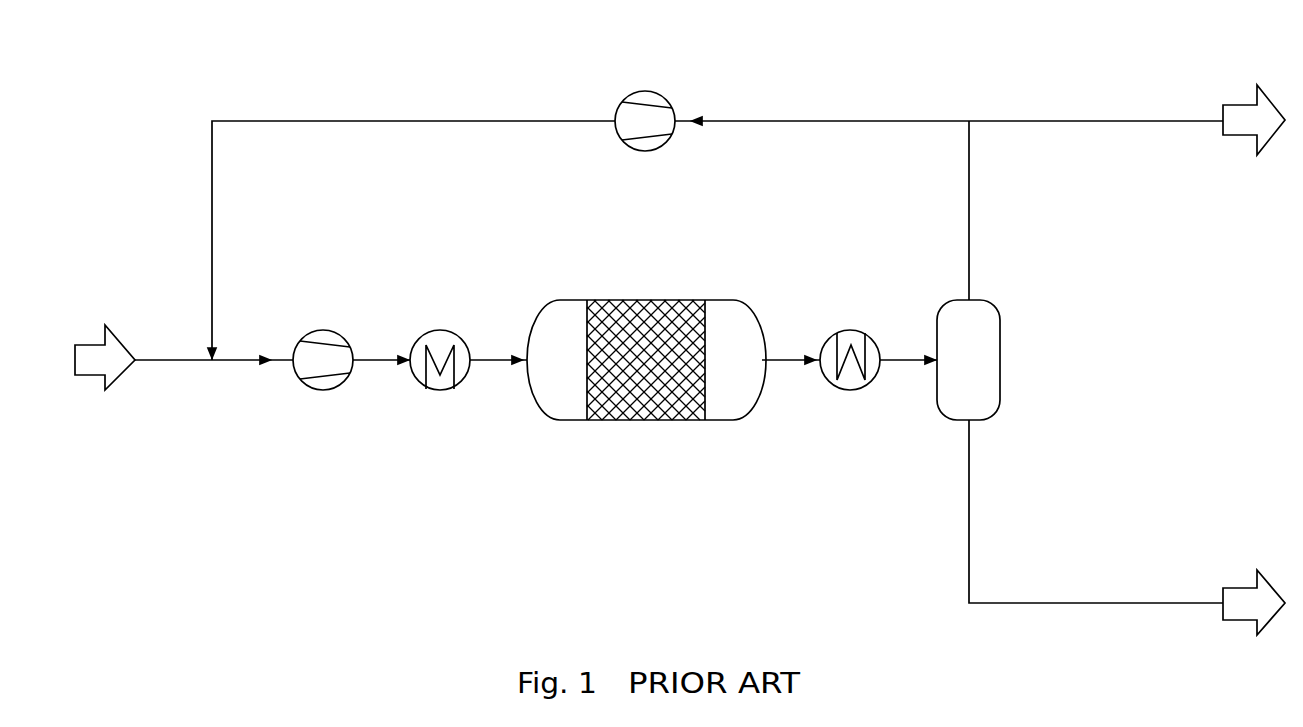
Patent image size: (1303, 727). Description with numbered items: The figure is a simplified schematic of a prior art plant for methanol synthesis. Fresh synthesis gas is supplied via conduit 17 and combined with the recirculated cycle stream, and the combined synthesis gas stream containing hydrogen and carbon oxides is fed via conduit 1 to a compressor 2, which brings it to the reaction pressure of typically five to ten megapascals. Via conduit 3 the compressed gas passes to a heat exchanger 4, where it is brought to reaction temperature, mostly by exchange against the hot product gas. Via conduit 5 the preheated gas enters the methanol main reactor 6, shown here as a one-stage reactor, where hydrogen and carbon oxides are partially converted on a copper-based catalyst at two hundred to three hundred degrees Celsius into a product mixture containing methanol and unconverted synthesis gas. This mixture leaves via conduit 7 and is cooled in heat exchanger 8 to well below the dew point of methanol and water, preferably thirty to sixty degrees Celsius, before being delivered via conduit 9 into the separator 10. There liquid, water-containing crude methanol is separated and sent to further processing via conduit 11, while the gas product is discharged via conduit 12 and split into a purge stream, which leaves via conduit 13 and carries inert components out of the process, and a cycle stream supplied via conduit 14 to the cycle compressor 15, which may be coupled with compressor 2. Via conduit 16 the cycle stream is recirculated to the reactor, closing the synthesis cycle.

The conduit 1 is at (252, 340).
The compressor 2 is at (323, 381).
The conduit 3 is at (381, 339).
The heat exchanger 4 is at (440, 381).
The conduit 5 is at (498, 339).
The methanol main reactor 6 is at (646, 380).
The conduit 7 is at (791, 343).
The heat exchanger 8 is at (850, 381).
The conduit 9 is at (908, 343).
The separator 10 is at (993, 367).
The conduit 11 is at (1127, 554).
The conduit 12 is at (950, 210).
The conduit 13 is at (1127, 92).
The conduit 14 is at (822, 99).
The cycle compressor 15 is at (645, 141).
The conduit 16 is at (411, 216).
The conduit 17 is at (143, 384).